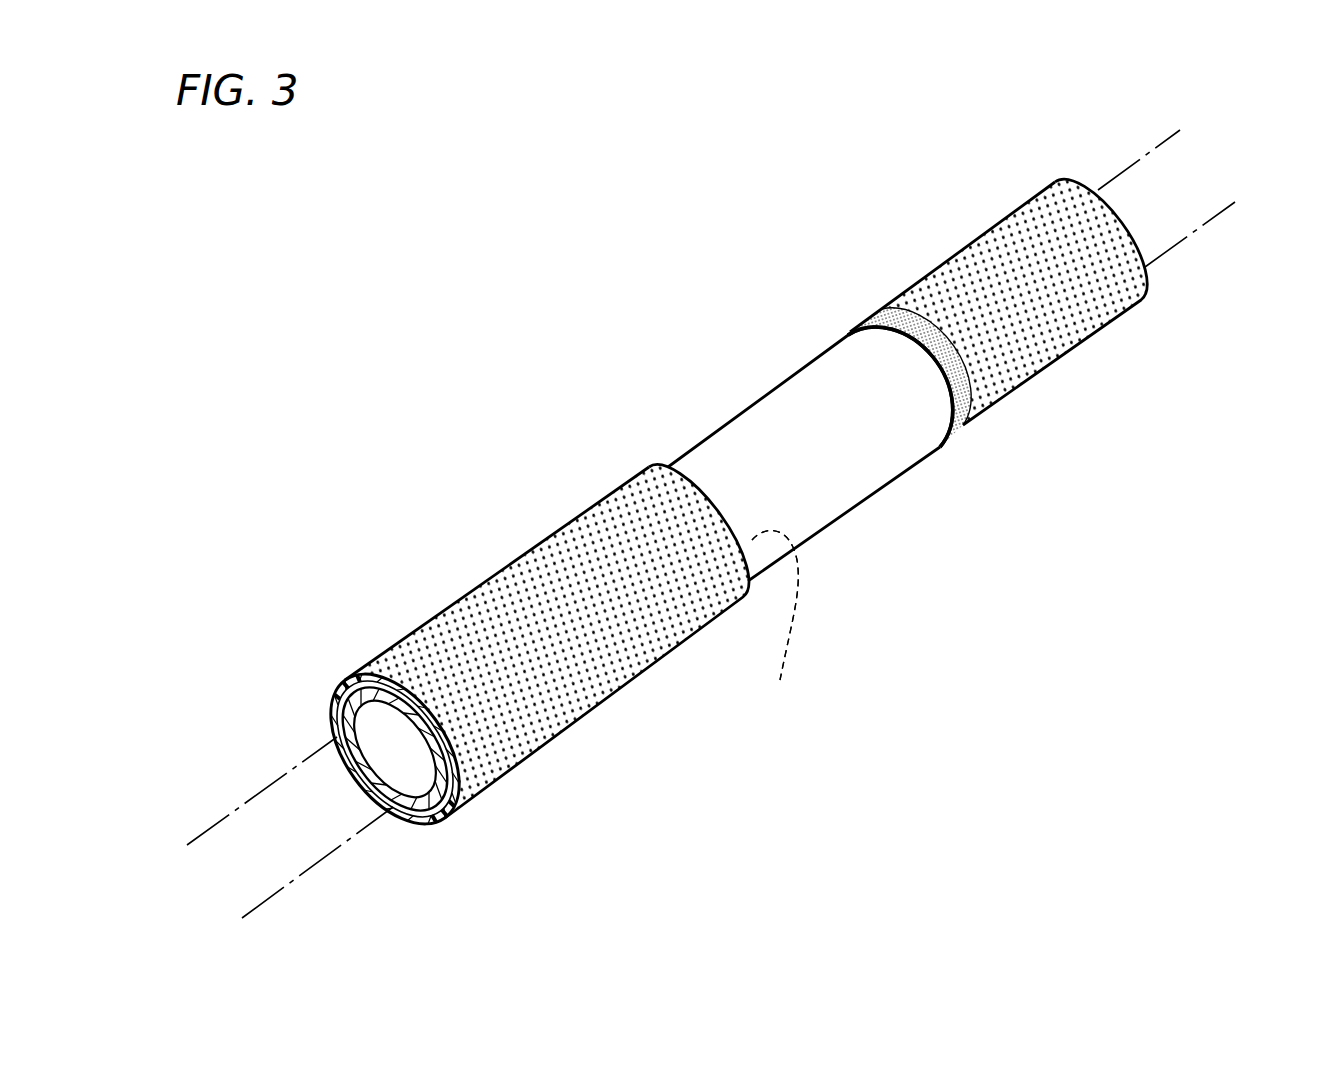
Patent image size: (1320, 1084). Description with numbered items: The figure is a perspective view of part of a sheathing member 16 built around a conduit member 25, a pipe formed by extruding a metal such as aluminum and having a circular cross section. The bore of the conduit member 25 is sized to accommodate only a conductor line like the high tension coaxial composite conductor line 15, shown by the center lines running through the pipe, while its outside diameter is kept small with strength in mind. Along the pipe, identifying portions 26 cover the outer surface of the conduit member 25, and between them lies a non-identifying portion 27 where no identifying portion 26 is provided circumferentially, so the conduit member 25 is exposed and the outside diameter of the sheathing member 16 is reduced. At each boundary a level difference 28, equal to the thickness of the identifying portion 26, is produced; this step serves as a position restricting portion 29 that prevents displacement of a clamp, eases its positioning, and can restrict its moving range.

The high tension coaxial composite conductor line 15 is at (270, 785).
The sheathing member 16 is at (553, 540).
The conduit member 25 is at (425, 803).
The identifying portion 26 is at (577, 683).
The non-identifying portion 27 is at (835, 483).
The level difference 28 is at (903, 337).
The position restricting portion 29 is at (834, 508).